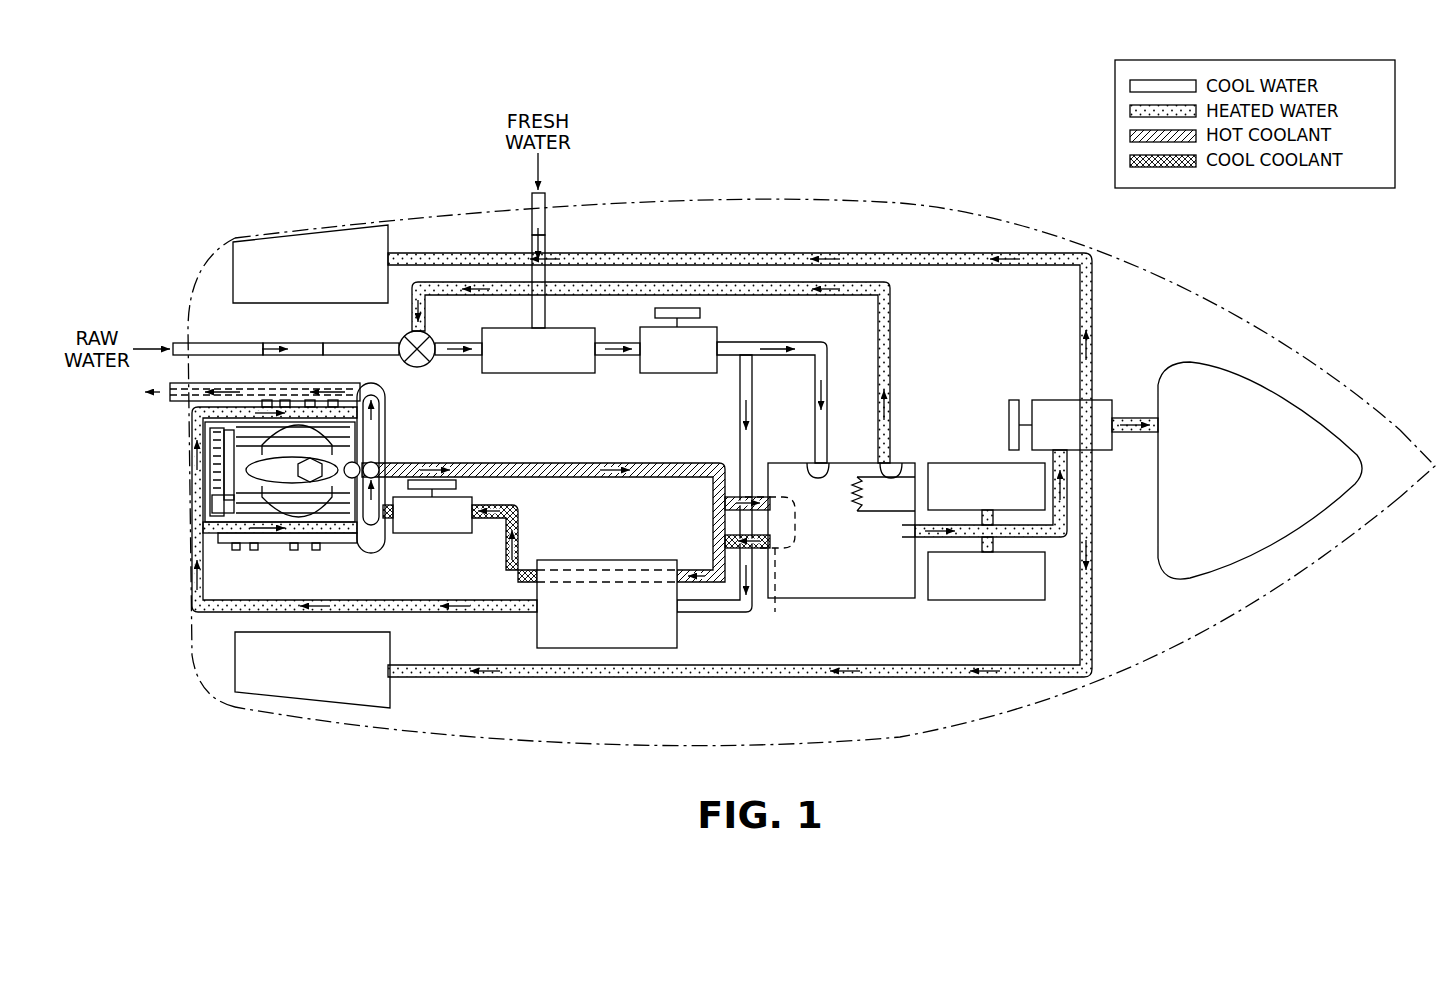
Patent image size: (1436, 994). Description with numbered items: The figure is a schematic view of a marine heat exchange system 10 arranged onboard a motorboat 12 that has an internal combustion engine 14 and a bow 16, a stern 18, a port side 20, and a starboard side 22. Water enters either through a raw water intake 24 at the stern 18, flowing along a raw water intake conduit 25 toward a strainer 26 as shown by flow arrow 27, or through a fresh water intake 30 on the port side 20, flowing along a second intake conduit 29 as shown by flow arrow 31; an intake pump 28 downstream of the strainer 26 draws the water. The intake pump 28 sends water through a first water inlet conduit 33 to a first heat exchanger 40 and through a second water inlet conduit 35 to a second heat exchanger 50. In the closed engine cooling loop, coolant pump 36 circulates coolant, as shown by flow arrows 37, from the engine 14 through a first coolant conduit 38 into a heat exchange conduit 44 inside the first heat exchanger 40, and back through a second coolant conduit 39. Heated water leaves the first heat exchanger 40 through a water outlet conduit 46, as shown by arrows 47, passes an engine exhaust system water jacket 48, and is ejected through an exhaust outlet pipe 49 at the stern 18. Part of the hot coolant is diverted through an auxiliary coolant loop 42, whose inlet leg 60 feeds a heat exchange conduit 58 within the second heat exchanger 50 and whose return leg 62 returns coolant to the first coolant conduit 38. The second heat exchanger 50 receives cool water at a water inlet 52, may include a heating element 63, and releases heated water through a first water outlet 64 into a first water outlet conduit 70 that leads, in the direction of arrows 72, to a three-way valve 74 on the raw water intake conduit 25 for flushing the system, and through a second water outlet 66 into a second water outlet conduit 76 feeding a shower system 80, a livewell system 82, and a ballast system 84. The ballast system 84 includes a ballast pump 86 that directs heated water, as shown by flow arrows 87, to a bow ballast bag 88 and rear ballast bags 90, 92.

The marine heat exchange system 10 is at (172, 104).
The motorboat 12 is at (781, 468).
The internal combustion engine 14 is at (200, 447).
The bow 16 is at (1432, 466).
The stern 18 is at (187, 500).
The port side 20 is at (835, 197).
The starboard side 22 is at (856, 744).
The raw water intake 24 is at (180, 342).
The raw water intake conduit 25 is at (212, 343).
The strainer 26 is at (540, 374).
The flow arrow 27 is at (276, 343).
The intake pump 28 is at (665, 374).
The second intake conduit 29 is at (531, 236).
The fresh water intake 30 is at (546, 200).
The flow arrow 31 is at (546, 243).
The first water inlet conduit 33 is at (739, 396).
The second water inlet conduit 35 is at (813, 393).
The coolant pump 36 is at (432, 534).
The flow arrows 37 is at (508, 462).
The first coolant conduit 38 is at (626, 462).
The second coolant conduit 39 is at (520, 508).
The first heat exchanger 40 is at (628, 586).
The auxiliary coolant loop 42 is at (732, 485).
The heat exchange conduit 44 is at (620, 560).
The water outlet conduit 46 is at (478, 613).
The flow arrows 47 is at (330, 405).
The engine exhaust system water jacket 48 is at (330, 545).
The exhaust outlet pipe 49 is at (172, 410).
The second heat exchanger 50 is at (849, 531).
The water inlet 52 is at (812, 463).
The heat exchange conduit 58 is at (775, 612).
The inlet leg 60 is at (724, 504).
The return leg 62 is at (724, 541).
The heating element 63 is at (852, 498).
The first water outlet 64 is at (898, 463).
The second water outlet 66 is at (914, 530).
The first water outlet conduit 70 is at (673, 372).
The arrows 72 is at (482, 298).
The three-way valve 74 is at (421, 366).
The second water outlet conduit 76 is at (922, 540).
The shower system 80 is at (980, 463).
The livewell system 82 is at (992, 601).
The ballast system 84 is at (765, 467).
The ballast pump 86 is at (1048, 400).
The flow arrows 87 is at (815, 253).
The bow ballast bag 88 is at (1243, 398).
The rear ballast bag 90 is at (296, 700).
The rear ballast bag 92 is at (300, 232).